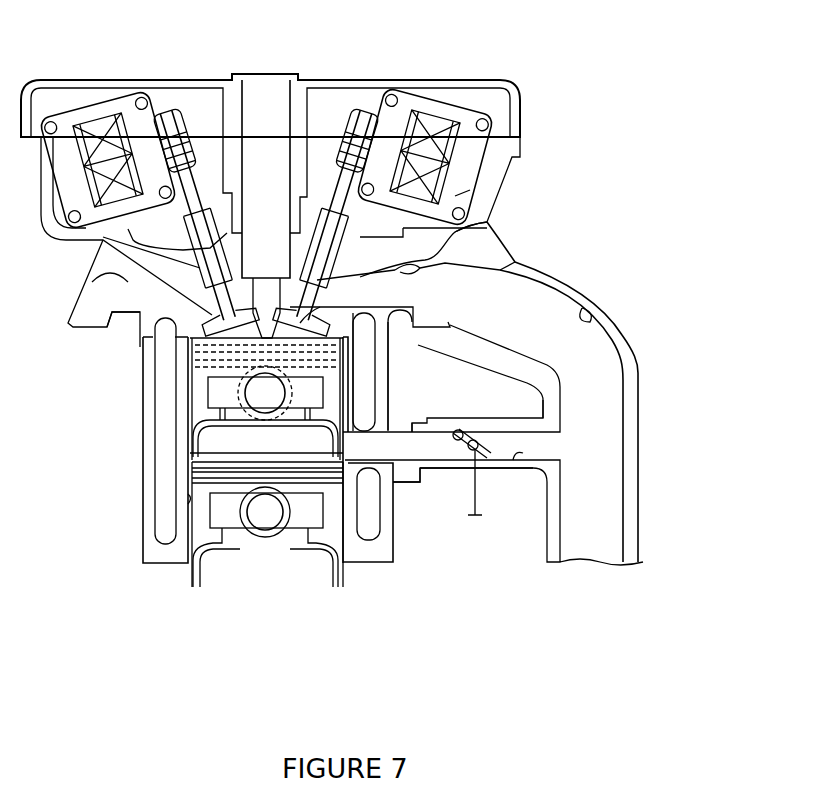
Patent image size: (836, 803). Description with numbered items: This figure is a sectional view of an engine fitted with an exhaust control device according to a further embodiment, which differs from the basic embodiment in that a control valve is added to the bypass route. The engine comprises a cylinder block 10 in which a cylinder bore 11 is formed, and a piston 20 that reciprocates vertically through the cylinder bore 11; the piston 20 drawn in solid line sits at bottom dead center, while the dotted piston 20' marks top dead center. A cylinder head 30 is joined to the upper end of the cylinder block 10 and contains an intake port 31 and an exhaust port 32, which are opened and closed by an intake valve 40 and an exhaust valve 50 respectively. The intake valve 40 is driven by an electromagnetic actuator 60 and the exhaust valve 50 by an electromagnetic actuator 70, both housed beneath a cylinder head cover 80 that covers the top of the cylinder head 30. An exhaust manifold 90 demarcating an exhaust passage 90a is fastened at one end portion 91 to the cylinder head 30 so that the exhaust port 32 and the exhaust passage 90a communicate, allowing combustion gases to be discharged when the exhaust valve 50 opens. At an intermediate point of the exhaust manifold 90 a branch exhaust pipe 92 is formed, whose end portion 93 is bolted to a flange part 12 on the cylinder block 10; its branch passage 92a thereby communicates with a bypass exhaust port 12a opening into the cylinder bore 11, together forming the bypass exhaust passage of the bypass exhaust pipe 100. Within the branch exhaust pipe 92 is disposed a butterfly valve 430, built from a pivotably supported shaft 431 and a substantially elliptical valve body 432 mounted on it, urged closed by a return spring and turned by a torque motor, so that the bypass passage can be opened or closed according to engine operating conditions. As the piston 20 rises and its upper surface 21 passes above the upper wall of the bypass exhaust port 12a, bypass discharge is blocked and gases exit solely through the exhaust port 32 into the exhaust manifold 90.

The cylinder block 10 is at (143, 518).
The cylinder bore 11 is at (188, 500).
The flange part 12 is at (405, 417).
The bypass exhaust port 12a is at (388, 433).
The piston 20 is at (267, 536).
The piston at top dead center 20' is at (218, 399).
The upper surface of the piston 21 is at (203, 453).
The cylinder head 30 is at (137, 325).
The intake port 31 is at (92, 275).
The exhaust port 32 is at (437, 334).
The intake valve 40 is at (103, 240).
The exhaust valve 50 is at (455, 196).
The electromagnetic actuator 60 is at (110, 94).
The electromagnetic actuator 70 is at (430, 85).
The cylinder head cover 80 is at (330, 80).
The exhaust manifold 90 is at (537, 273).
The exhaust passage 90a is at (584, 310).
The one end portion of the exhaust manifold 91 is at (475, 256).
The branch exhaust pipe 92 is at (523, 417).
The branch passage 92a is at (517, 453).
The end portion of the branch exhaust pipe 93 is at (420, 477).
The bypass exhaust pipe 100 is at (448, 483).
The butterfly valve 430 is at (491, 483).
The shaft 431 is at (475, 440).
The valve body 432 is at (454, 432).